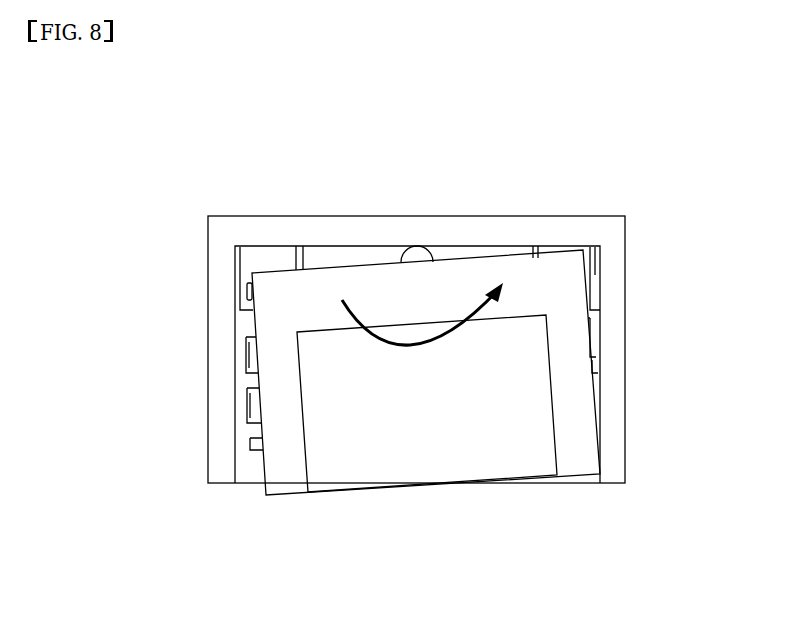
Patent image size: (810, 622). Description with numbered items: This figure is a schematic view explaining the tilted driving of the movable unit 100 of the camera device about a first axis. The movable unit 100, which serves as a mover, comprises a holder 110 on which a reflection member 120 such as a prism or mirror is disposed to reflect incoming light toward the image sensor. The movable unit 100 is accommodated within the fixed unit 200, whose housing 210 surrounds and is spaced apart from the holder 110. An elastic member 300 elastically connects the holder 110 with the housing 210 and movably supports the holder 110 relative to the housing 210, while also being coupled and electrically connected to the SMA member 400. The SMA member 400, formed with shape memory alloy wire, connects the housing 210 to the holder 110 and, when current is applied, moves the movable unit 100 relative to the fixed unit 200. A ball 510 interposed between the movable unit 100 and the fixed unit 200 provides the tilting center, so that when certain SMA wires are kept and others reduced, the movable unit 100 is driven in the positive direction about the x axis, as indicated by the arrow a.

The movable unit 100 is at (444, 426).
The holder 110 is at (575, 457).
The reflection member 120 is at (427, 433).
The fixed unit 200 is at (625, 281).
The housing 210 is at (602, 223).
The elastic member 300 is at (243, 277).
The SMA member 400 is at (258, 273).
The ball 510 is at (420, 257).